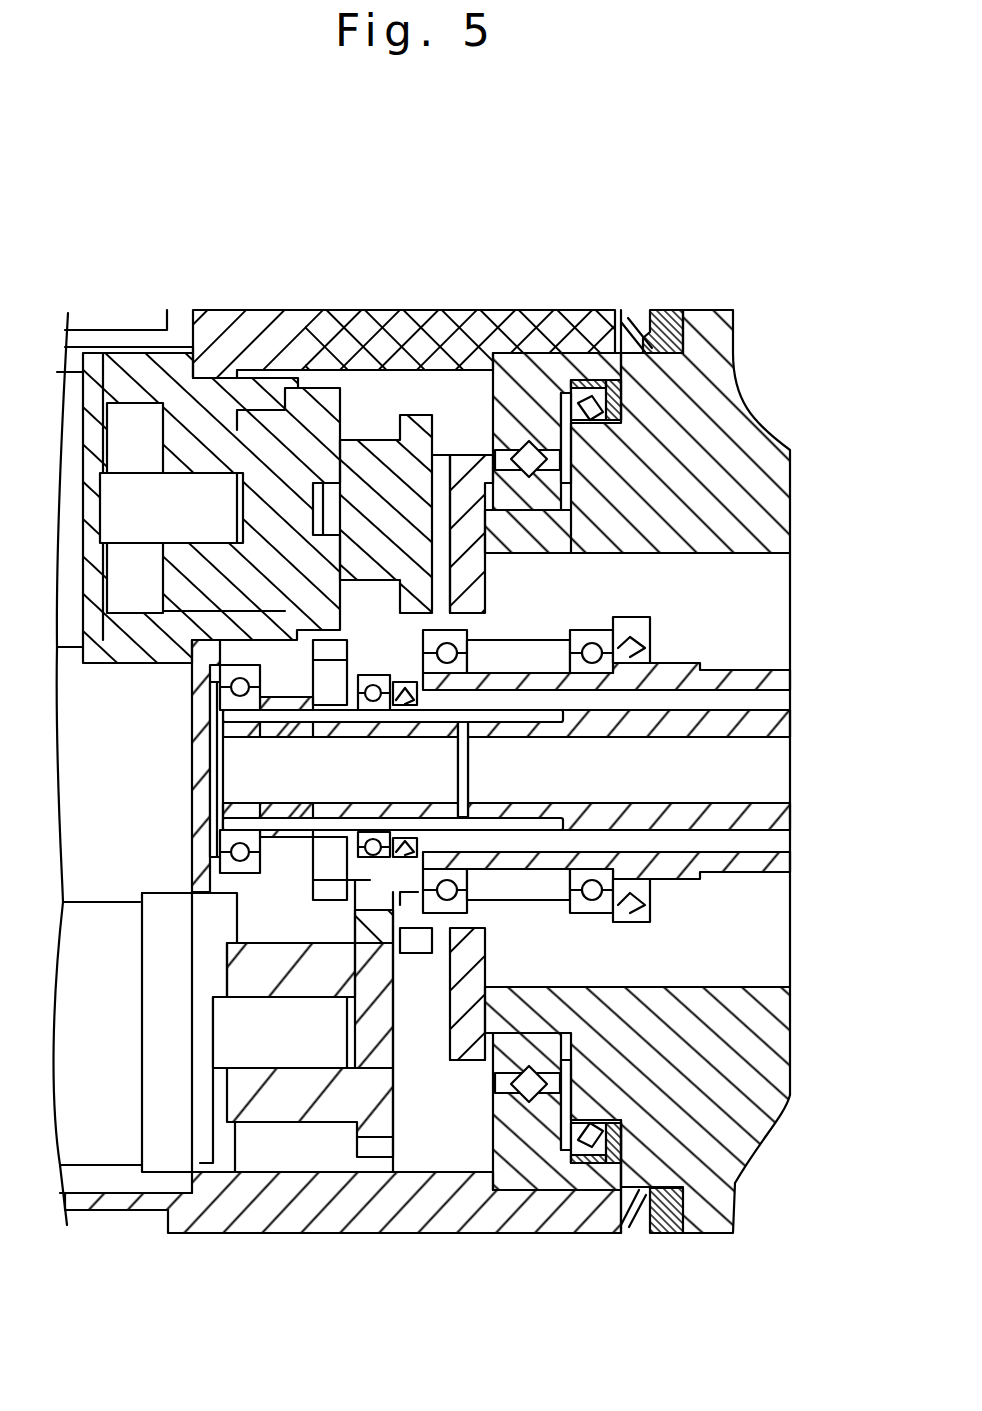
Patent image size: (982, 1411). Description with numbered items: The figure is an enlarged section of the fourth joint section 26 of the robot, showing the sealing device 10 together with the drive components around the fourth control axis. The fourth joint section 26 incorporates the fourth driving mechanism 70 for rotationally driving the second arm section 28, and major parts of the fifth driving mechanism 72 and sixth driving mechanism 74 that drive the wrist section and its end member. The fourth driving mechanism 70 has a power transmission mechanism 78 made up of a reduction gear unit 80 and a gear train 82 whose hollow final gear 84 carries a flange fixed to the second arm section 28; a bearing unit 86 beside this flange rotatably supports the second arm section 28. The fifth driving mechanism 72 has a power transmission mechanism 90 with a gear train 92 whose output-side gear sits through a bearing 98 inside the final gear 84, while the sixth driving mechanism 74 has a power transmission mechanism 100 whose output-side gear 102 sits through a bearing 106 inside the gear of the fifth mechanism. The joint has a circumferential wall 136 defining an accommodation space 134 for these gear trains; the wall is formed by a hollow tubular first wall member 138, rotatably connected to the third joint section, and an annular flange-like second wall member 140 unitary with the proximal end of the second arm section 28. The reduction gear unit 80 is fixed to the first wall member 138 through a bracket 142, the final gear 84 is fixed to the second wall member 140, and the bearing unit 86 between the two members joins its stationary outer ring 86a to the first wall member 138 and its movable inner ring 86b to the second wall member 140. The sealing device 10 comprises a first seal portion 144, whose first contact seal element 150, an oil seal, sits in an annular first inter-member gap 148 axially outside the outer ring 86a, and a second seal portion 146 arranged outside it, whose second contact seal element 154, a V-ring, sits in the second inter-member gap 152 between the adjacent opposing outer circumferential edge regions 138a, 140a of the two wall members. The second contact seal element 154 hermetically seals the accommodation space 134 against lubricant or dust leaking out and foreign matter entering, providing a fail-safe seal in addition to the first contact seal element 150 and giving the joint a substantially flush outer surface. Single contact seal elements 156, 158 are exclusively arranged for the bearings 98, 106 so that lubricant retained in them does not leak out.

The sealing device 10 is at (770, 197).
The fourth joint section 26 is at (424, 1252).
The second arm section 28 is at (778, 1115).
The fourth driving mechanism 70 is at (385, 385).
The fifth driving mechanism 72 is at (257, 1150).
The sixth driving mechanism 74 is at (240, 768).
The power transmission mechanism 78 is at (210, 243).
The reduction gear unit 80 is at (240, 420).
The gear train 82 is at (358, 425).
The final gear 84 is at (385, 388).
The bearing unit 86 is at (452, 420).
The outer ring 86a is at (485, 430).
The inner ring 86b is at (542, 495).
The power transmission mechanism 90 is at (329, 1135).
The gear train 92 is at (287, 1107).
The bearing 98 is at (600, 902).
The power transmission mechanism 100 is at (250, 797).
The output-side gear 102 is at (358, 697).
The bearing 106 is at (662, 690).
The accommodation space 134 is at (410, 1155).
The circumferential wall 136 is at (775, 1303).
The first wall member 138 is at (455, 1220).
The outer circumferential edge region 138a is at (622, 1227).
The second wall member 140 is at (718, 1215).
The outer circumferential edge region 140a is at (670, 1187).
The bracket 142 is at (125, 377).
The first seal portion 144 is at (568, 390).
The second seal portion 146 is at (678, 297).
The first inter-member gap 148 is at (512, 378).
The first contact seal element 150 is at (578, 368).
The second inter-member gap 152 is at (634, 318).
The second contact seal element 154 is at (673, 305).
The contact seal element 156 is at (650, 897).
The contact seal element 158 is at (650, 660).